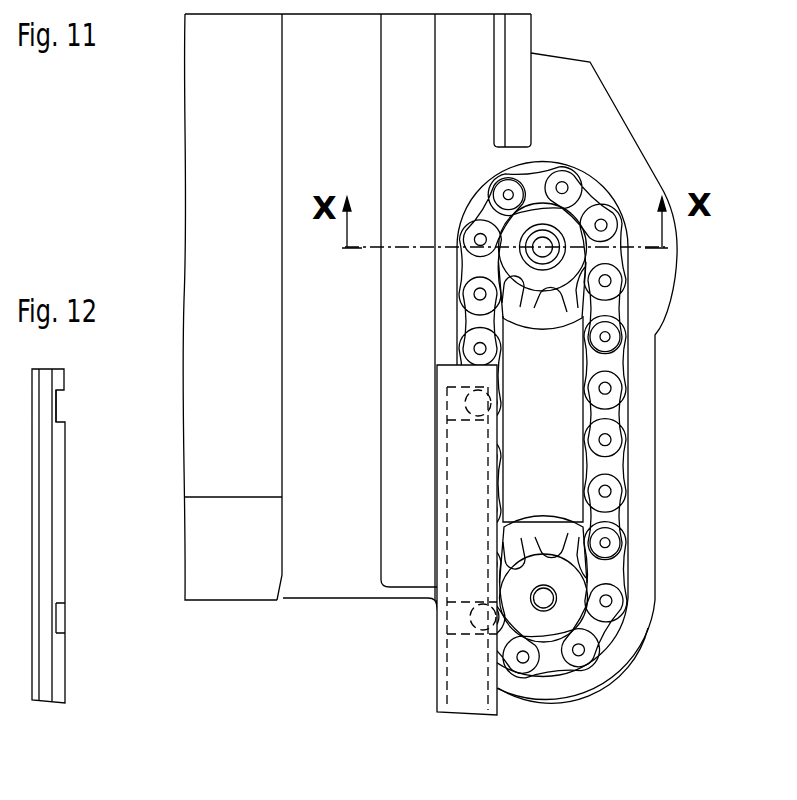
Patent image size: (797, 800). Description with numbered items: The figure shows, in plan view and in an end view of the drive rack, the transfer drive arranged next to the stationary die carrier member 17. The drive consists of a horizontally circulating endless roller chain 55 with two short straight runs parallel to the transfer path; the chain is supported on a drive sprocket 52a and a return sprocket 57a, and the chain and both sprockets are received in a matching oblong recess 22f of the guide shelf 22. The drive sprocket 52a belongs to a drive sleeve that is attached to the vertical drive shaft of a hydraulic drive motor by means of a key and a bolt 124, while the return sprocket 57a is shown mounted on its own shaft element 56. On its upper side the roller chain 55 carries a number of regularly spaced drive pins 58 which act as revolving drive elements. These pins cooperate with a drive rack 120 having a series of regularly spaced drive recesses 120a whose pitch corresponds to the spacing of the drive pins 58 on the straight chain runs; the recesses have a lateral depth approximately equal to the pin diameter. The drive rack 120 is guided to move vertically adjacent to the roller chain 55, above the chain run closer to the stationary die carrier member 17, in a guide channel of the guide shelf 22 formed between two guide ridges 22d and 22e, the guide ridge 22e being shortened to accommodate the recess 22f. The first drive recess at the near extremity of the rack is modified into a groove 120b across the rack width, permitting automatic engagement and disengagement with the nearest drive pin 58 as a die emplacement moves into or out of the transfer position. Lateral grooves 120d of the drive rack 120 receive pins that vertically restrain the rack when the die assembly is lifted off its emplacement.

In FIG. 11, the stationary die carrier member 17 is at (225, 171).
In FIG. 11, the guide shelf 22 is at (272, 377).
In FIG. 11, the guide ridge 22d is at (405, 84).
In FIG. 11, the guide ridge 22e is at (512, 83).
In FIG. 11, the oblong recess 22f is at (592, 178).
In FIG. 11, the bolt 124 is at (545, 245).
In FIG. 11, the drive sprocket 52a is at (558, 283).
In FIG. 11, the drive pins 58 is at (512, 200).
In FIG. 11, the endless roller chain 55 is at (618, 590).
In FIG. 11, the return sprocket 57a is at (570, 588).
In FIG. 11, the lower shaft 56 is at (548, 600).
In FIG. 11, the drive rack 120 is at (426, 471).
In FIG. 12, the drive rack 120 is at (76, 527).
In FIG. 11, the groove 120b is at (688, 393).
In FIG. 12, the groove 120b is at (65, 405).
In FIG. 11, the lateral grooves 120d is at (440, 630).
In FIG. 12, the lateral grooves 120d is at (50, 570).
In FIG. 11, the drive recesses 120a is at (480, 637).
In FIG. 12, the drive recesses 120a is at (65, 623).